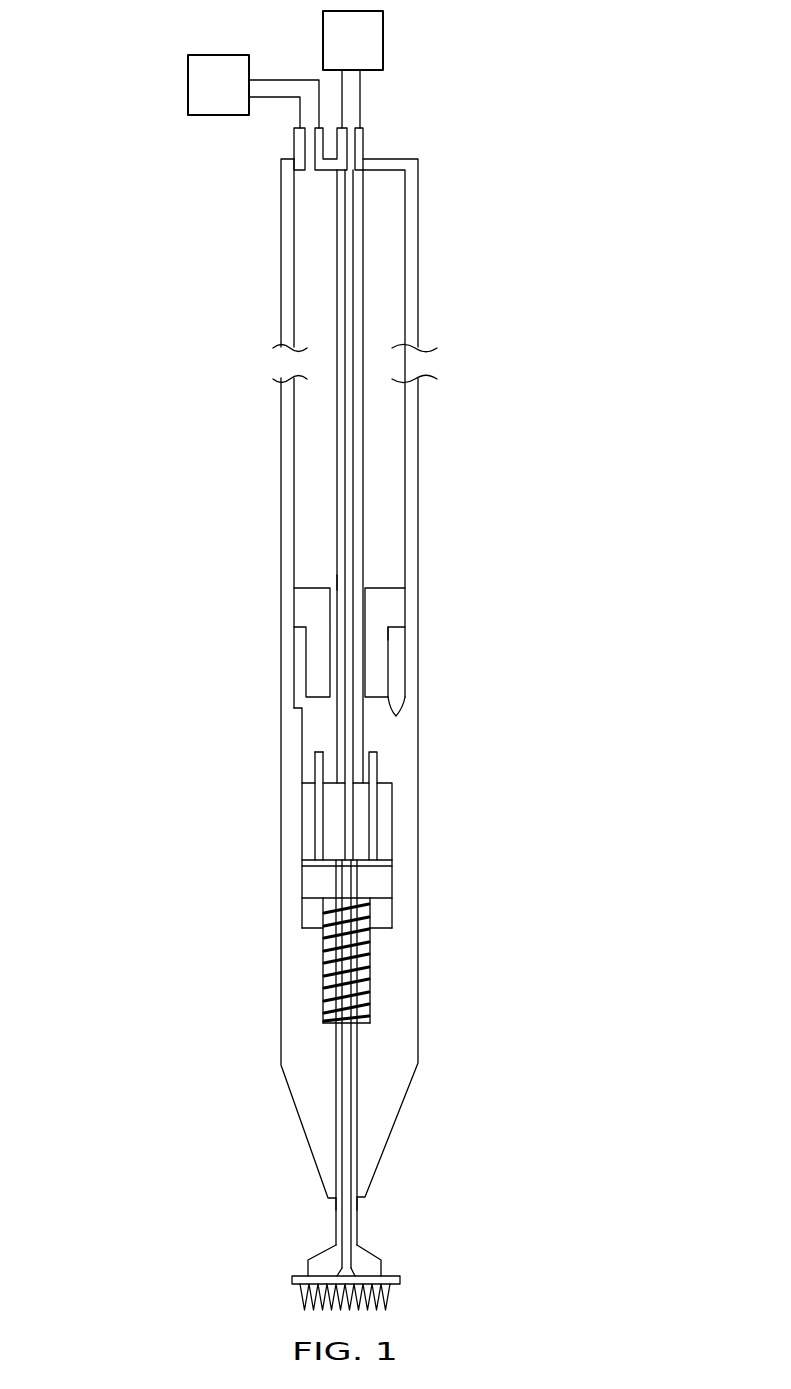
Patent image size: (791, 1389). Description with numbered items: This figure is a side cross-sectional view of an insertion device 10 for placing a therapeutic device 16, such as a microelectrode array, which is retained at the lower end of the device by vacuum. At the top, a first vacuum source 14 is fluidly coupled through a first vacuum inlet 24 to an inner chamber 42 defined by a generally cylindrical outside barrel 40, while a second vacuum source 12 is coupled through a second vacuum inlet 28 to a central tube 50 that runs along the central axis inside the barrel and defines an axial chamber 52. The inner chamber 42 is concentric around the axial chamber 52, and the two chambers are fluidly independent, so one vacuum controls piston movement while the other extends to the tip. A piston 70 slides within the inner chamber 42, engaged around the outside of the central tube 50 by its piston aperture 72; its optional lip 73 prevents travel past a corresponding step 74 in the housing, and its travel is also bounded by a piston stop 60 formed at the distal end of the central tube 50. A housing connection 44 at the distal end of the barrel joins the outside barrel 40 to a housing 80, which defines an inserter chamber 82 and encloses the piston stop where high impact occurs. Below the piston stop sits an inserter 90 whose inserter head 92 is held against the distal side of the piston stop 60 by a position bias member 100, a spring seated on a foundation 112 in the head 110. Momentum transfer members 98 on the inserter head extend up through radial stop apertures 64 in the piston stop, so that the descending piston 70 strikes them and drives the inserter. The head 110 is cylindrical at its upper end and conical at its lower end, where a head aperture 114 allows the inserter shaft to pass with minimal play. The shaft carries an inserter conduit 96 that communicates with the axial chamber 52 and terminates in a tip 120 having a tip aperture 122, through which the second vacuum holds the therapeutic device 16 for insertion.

The insertion device 10 is at (100, 175).
The second vacuum source 12 is at (369, 48).
The first vacuum source 14 is at (207, 90).
The therapeutic device 16 is at (292, 1282).
The first vacuum inlet 24 is at (306, 150).
The second vacuum inlet 28 is at (352, 146).
The outside barrel 40 is at (276, 383).
The inner chamber 42 is at (294, 474).
The housing connection 44 is at (292, 679).
The central tube 50 is at (363, 273).
The axial chamber 52 is at (350, 405).
The piston stop 60 is at (385, 812).
The radial stop aperture 64 is at (313, 783).
The piston 70 is at (382, 595).
The piston aperture 72 is at (337, 583).
The lip 73 is at (388, 628).
The step 74 is at (404, 697).
The housing 80 is at (292, 876).
The inserter chamber 82 is at (323, 737).
The inserter 90 is at (342, 1065).
The inserter head 92 is at (378, 883).
The inserter conduit 96 is at (335, 1218).
The momentum transfer member 98 is at (313, 780).
The position bias member 100 is at (367, 912).
The head 110 is at (395, 980).
The foundation 112 is at (323, 1021).
The head aperture 114 is at (357, 1200).
The tip 120 is at (367, 1265).
The tip aperture 122 is at (340, 1272).